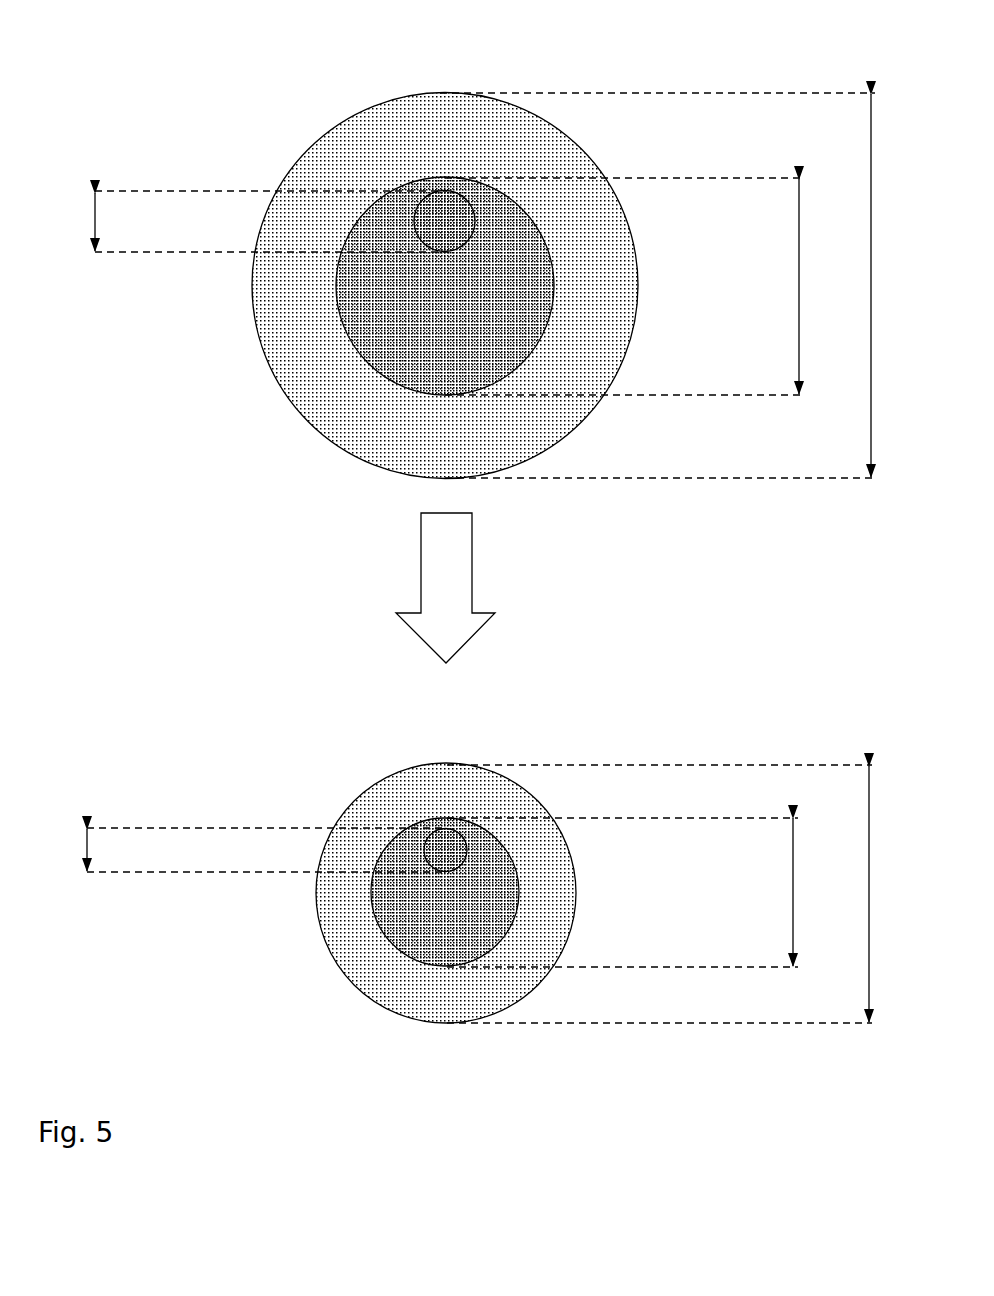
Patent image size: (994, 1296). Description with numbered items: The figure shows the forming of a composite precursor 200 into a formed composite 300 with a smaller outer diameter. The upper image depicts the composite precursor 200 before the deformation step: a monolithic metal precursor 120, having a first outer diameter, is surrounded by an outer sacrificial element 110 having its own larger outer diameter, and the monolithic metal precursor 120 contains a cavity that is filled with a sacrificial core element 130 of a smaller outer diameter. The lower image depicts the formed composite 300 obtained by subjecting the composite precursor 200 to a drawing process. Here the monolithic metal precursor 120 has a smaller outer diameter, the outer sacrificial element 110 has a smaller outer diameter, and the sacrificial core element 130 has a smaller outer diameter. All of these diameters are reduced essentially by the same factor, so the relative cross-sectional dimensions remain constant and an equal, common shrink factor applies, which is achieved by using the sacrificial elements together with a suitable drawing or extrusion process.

The outer sacrificial element 110 is at (590, 325).
The monolithic metal precursor 120 is at (410, 352).
The sacrificial core element 130 is at (430, 210).
The composite precursor 200 is at (215, 175).
The formed composite 300 is at (218, 783).